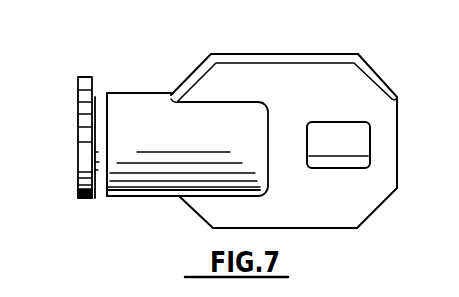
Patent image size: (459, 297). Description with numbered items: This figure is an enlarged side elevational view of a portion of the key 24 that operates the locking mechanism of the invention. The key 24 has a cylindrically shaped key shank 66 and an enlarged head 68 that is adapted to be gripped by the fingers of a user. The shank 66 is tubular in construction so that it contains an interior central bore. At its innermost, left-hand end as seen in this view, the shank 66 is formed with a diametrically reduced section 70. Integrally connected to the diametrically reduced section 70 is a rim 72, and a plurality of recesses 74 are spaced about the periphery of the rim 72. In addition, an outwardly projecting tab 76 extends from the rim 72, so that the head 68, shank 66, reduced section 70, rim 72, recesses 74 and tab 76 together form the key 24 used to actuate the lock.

The key 24 is at (263, 55).
The key shank 66 is at (148, 104).
The enlarged head 68 is at (347, 54).
The diametrically reduced section 70 is at (101, 106).
The rim 72 is at (82, 112).
The recesses 74 is at (86, 140).
The outwardly projecting tab 76 is at (82, 76).